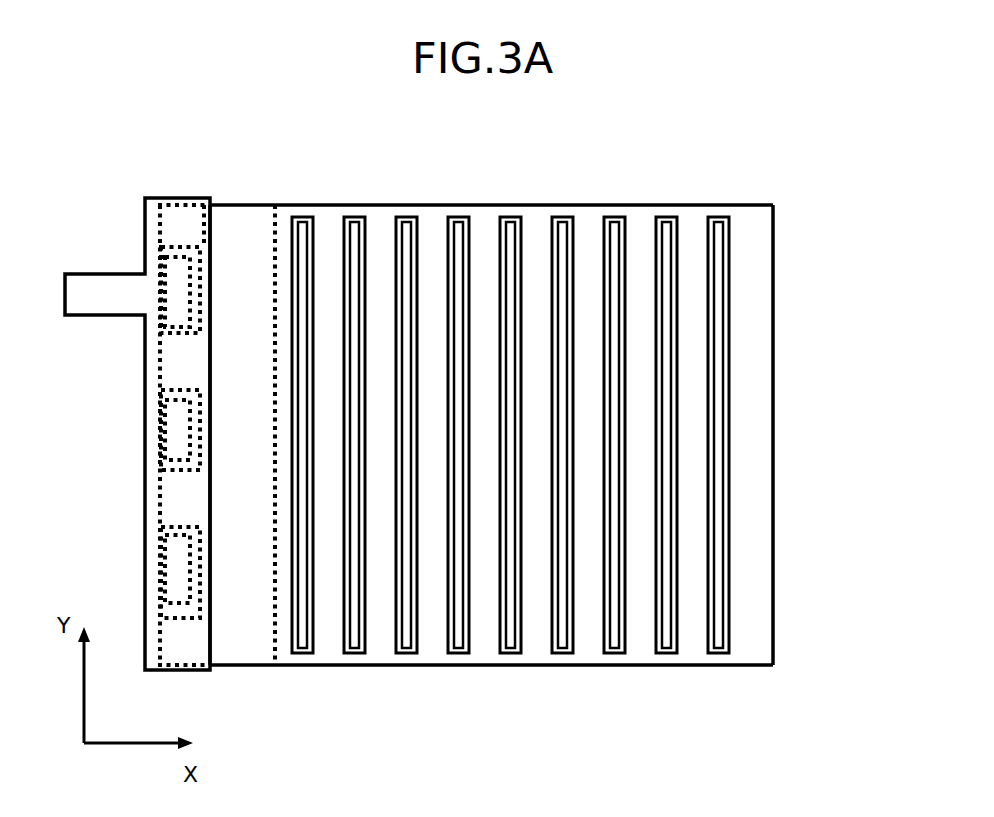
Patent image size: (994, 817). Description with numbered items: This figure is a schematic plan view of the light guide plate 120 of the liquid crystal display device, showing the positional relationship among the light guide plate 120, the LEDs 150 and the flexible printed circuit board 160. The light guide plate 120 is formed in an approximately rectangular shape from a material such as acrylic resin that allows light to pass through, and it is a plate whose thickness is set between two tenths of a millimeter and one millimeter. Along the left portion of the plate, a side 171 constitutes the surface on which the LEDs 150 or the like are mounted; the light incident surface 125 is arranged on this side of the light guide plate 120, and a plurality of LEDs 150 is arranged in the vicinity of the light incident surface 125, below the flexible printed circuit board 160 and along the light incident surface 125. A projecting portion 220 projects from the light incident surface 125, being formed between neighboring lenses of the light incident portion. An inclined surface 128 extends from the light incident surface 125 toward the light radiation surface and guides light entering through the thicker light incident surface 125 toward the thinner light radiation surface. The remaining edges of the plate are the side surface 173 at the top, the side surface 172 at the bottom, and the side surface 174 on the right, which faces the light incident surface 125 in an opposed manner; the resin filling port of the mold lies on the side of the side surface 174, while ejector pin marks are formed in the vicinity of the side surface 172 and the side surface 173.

The flexible printed circuit board 160 is at (173, 220).
The side 171 is at (157, 510).
The projecting portion 220 is at (180, 362).
The light incident surface 125 is at (178, 400).
The LED 150 is at (182, 443).
The inclined surface 128 is at (262, 215).
The light guide plate 120 is at (435, 225).
The side surface 173 is at (548, 203).
The side surface 172 is at (552, 668).
The side surface 174 is at (775, 420).